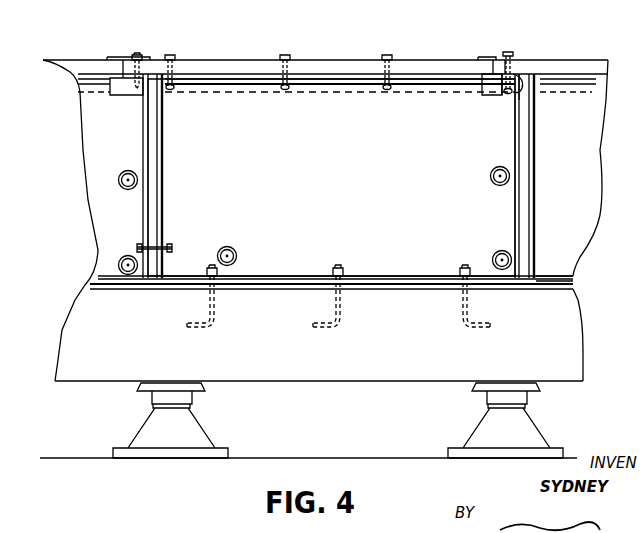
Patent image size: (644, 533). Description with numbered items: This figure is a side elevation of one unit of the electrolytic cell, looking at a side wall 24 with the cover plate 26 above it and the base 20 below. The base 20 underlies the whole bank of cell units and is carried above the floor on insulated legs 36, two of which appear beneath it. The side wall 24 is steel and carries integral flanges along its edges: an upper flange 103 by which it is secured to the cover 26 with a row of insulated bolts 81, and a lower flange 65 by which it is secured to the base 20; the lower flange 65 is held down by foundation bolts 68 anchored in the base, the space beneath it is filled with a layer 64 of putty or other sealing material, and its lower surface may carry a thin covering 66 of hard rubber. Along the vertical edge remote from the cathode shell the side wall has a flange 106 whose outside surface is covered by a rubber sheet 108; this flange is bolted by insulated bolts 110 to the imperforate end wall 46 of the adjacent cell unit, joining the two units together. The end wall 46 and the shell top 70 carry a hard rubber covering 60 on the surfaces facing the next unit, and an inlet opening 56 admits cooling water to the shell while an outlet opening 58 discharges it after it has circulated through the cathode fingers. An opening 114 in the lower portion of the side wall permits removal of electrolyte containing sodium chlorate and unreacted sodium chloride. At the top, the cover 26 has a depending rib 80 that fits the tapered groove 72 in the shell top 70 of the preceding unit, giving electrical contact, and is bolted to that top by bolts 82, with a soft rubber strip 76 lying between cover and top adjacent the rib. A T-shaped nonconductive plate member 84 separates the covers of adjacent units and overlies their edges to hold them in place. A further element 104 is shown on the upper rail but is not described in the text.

The base 20 is at (270, 372).
The side walls 24 is at (331, 177).
The cover plate 26 is at (249, 60).
The insulated legs 36 is at (143, 428).
The imperforate wall 46 is at (513, 198).
The inlet opening 56 is at (495, 253).
The outlet opening 58 is at (490, 176).
The thin covering of hard rubber 60 is at (517, 145).
The layer of putty 64 is at (528, 196).
The lower flange 65 is at (304, 276).
The thin covering of hard rubber 66 is at (411, 276).
The foundation bolts 68 is at (344, 270).
The shell top 70 is at (488, 94).
The groove 72 is at (501, 93).
The strip of soft rubber 76 is at (524, 96).
The rib 80 is at (520, 75).
The bolts 81 is at (391, 58).
The bolts 82 is at (512, 57).
The nonconductive plate member 84 is at (482, 57).
The upper flange 103 is at (412, 92).
The top rail 104 is at (441, 82).
The flange 106 is at (166, 168).
The sheet or coating of rubber 108 is at (160, 215).
The bolts 110 is at (174, 246).
The opening 114 is at (238, 255).